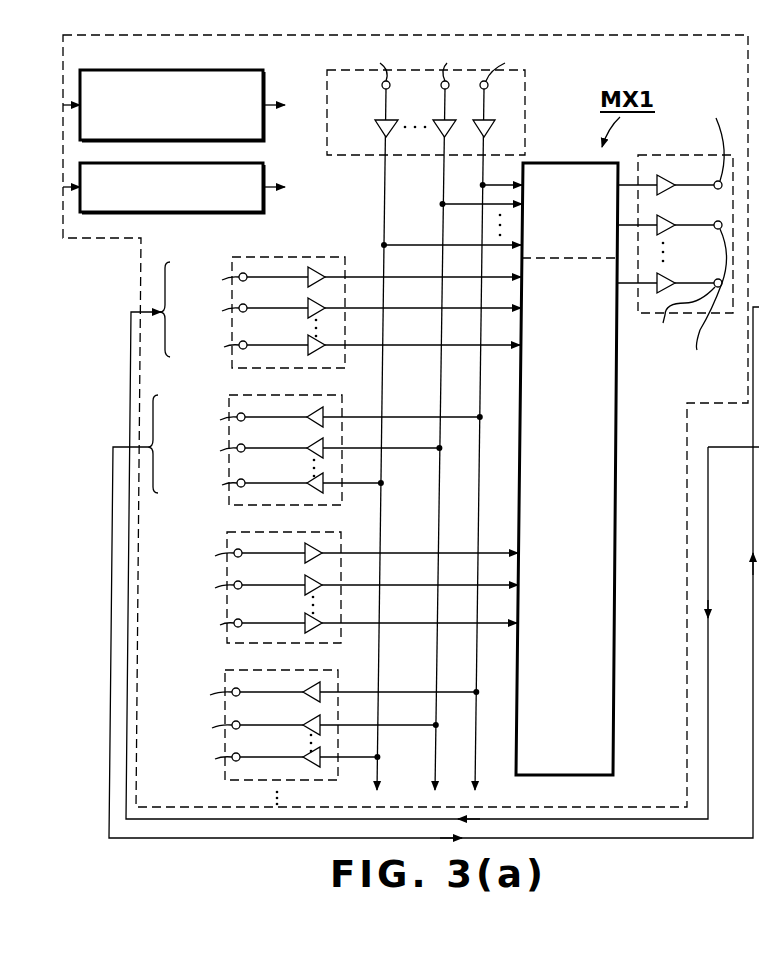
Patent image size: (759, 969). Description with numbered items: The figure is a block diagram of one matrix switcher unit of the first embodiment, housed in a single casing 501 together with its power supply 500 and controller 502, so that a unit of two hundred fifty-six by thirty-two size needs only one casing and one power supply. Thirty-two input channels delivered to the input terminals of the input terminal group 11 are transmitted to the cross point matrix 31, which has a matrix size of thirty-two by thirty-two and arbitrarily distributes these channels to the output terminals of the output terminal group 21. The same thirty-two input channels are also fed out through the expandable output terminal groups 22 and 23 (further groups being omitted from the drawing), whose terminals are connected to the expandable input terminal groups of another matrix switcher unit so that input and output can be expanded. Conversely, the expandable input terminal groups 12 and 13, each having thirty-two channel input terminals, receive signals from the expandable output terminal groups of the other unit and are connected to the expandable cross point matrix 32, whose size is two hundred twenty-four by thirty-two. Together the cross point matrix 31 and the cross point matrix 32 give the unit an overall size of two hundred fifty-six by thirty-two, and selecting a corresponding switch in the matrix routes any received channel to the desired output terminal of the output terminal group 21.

The power supply 500 is at (160, 70).
The casing 501 is at (368, 35).
The controller 502 is at (264, 172).
The input terminal group 11 is at (326, 121).
The expandable input terminal group 12 is at (278, 257).
The expandable input terminal group 13 is at (318, 532).
The output terminal group 21 is at (693, 153).
The expandable output terminal group 22 is at (320, 395).
The expandable output terminal group 23 is at (310, 670).
The cross point matrix 31 is at (564, 163).
The cross point matrix 32 is at (618, 508).